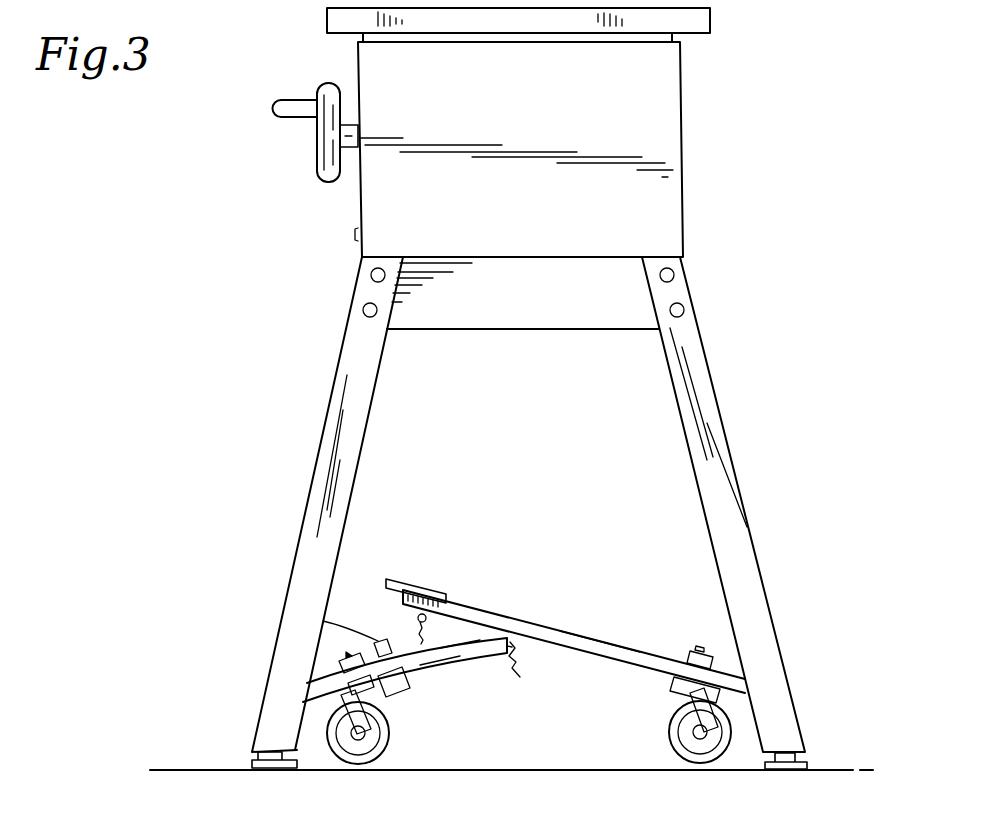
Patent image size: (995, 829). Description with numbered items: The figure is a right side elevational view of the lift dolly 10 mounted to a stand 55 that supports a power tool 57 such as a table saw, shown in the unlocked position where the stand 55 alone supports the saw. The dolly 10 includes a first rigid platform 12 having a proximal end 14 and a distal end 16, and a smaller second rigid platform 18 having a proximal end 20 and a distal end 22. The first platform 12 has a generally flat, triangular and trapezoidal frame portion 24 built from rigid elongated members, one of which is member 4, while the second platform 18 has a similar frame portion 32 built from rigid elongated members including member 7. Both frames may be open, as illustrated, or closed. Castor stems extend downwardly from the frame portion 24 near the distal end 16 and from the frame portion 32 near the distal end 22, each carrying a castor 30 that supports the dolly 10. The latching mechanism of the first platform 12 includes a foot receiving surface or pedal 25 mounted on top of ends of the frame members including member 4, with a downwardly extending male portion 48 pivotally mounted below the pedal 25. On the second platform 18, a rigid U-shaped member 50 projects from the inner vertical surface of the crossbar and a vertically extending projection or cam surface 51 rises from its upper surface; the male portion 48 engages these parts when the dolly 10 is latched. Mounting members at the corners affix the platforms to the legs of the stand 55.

The rigid elongated member 4 is at (503, 618).
The rigid elongated member 7 is at (473, 652).
The lift dolly 10 is at (541, 548).
The first rigid platform 12 is at (566, 628).
The proximal end 14 is at (400, 600).
The distal end 16 is at (722, 650).
The second rigid platform 18 is at (449, 669).
The proximal end 20 is at (508, 645).
The distal end 22 is at (317, 686).
The frame portion 24 is at (654, 670).
The foot receiving surface or pedal 25 is at (407, 580).
The castor 30 is at (378, 752).
The frame portion 32 is at (417, 658).
The male portion 48 is at (417, 625).
The U-shaped member 50 is at (408, 692).
The projection or cam surface 51 is at (323, 621).
The stand 55 is at (708, 392).
The power tool 57 is at (750, 132).